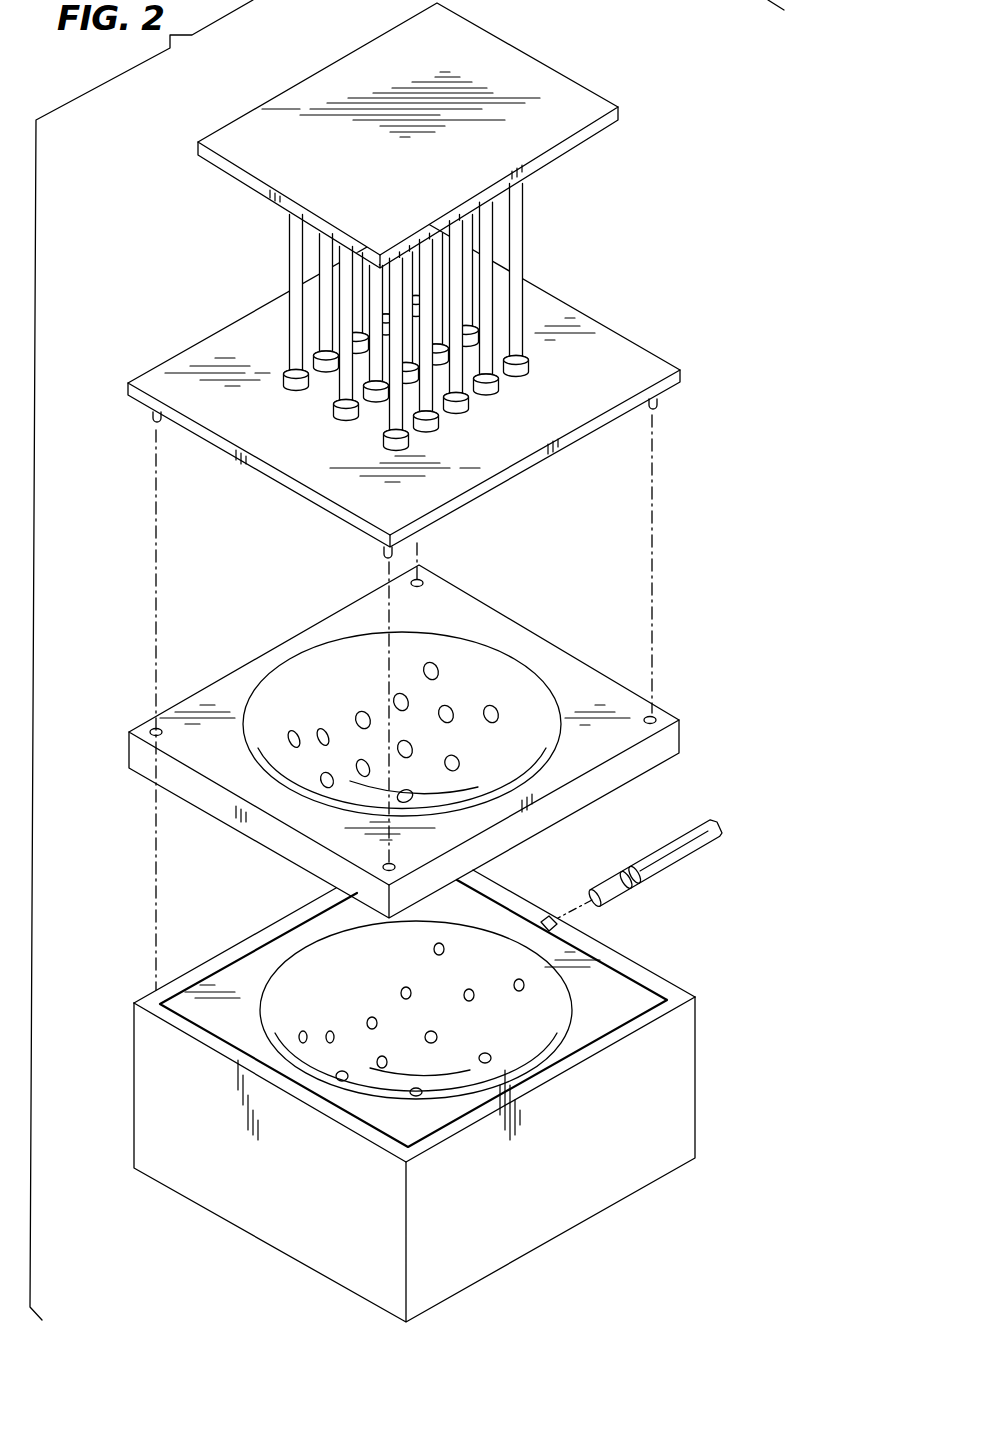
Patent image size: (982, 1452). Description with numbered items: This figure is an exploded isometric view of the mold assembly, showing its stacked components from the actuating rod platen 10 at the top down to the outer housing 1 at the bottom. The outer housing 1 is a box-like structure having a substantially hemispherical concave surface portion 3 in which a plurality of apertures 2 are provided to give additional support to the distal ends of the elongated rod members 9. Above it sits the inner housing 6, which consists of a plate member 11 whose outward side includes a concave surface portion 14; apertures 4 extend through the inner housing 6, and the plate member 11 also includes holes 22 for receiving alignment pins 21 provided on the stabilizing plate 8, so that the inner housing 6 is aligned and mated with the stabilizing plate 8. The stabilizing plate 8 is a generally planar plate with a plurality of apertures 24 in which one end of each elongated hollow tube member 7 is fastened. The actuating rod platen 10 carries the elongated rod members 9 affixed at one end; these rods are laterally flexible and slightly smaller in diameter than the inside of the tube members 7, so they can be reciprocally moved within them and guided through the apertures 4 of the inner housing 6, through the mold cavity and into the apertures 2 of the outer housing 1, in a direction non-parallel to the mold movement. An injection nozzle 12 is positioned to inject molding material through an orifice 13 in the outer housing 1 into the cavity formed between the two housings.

The outer housing 1 is at (736, 1092).
The apertures 2 is at (333, 1034).
The hemispherical concave surface portion 3 is at (279, 987).
The apertures 4 is at (365, 717).
The inner housing 6 is at (419, 741).
The elongated hollow tube members 7 is at (529, 362).
The stabilizing plate 8 is at (656, 366).
The elongated rod members 9 is at (435, 316).
The actuating rod platen 10 is at (568, 100).
The plate member 11 is at (585, 789).
The injection nozzle 12 is at (617, 891).
The orifice 13 is at (552, 916).
The concave surface portion 14 is at (466, 672).
The alignment pins 21 is at (658, 410).
The holes 22 is at (654, 718).
The apertures 24 is at (466, 406).